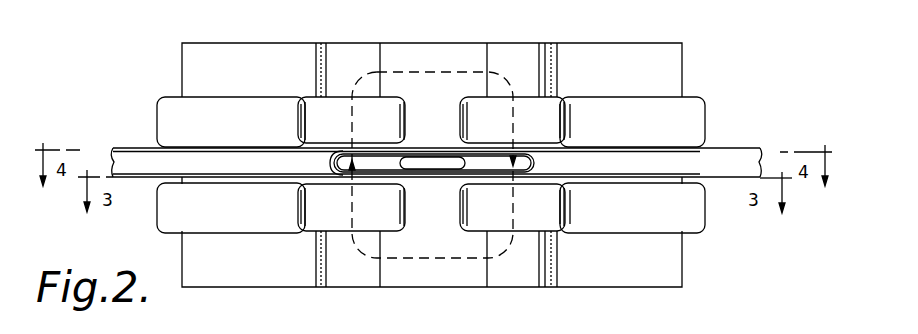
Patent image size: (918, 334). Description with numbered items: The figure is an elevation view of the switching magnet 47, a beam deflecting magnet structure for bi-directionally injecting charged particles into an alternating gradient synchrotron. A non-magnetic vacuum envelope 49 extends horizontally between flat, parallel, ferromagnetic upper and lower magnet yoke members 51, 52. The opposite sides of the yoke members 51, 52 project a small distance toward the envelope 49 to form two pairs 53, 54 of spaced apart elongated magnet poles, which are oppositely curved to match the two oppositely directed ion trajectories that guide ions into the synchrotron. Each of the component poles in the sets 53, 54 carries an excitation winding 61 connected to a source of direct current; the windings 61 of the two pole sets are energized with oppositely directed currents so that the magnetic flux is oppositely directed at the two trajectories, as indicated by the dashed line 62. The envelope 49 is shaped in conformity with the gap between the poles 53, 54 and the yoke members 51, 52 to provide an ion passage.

The switching magnet 47 is at (694, 32).
The vacuum envelope 49 is at (662, 172).
The upper magnet yoke member 51 is at (476, 43).
The lower magnet yoke member 52 is at (422, 288).
The pair of magnet poles 53 is at (536, 163).
The pair of magnet poles 54 is at (326, 163).
The excitation winding 61 is at (238, 124).
The dashed line 62 is at (372, 258).